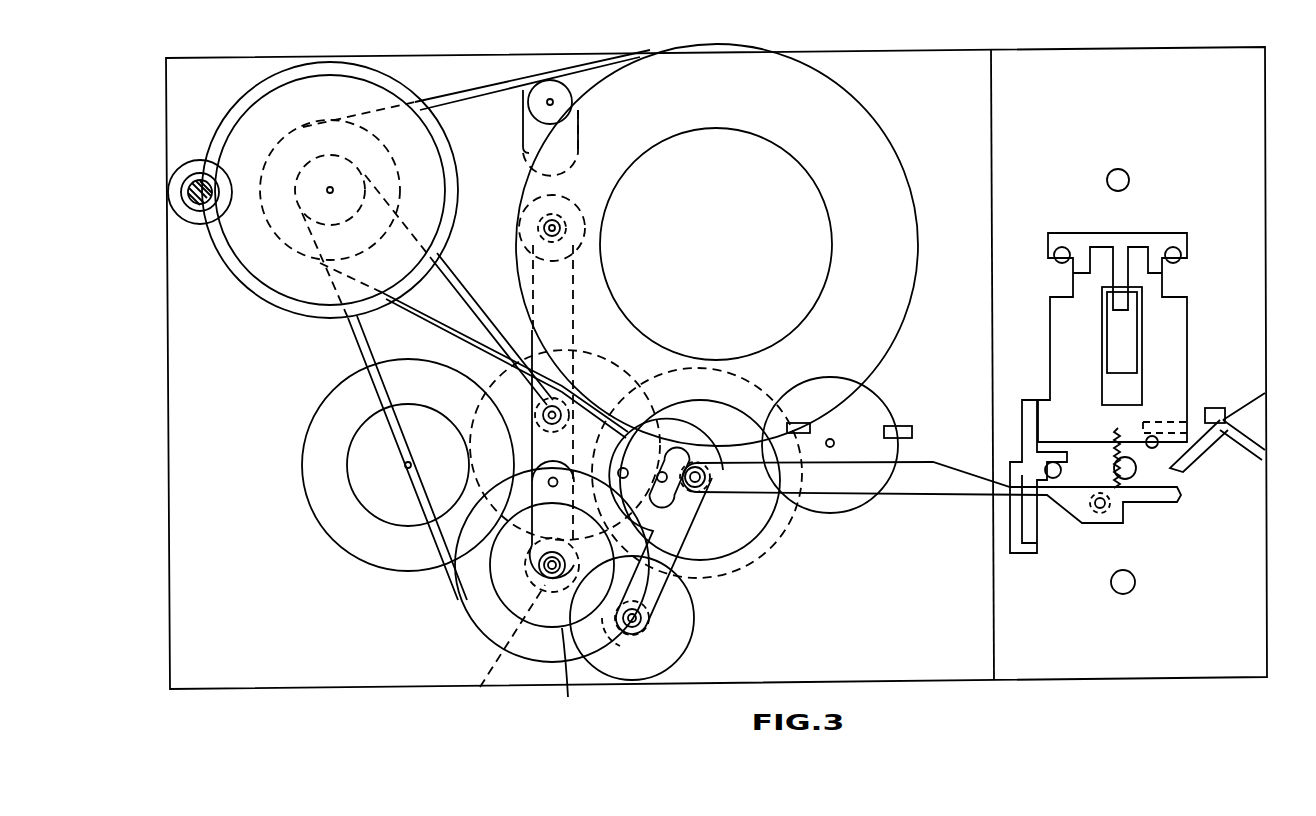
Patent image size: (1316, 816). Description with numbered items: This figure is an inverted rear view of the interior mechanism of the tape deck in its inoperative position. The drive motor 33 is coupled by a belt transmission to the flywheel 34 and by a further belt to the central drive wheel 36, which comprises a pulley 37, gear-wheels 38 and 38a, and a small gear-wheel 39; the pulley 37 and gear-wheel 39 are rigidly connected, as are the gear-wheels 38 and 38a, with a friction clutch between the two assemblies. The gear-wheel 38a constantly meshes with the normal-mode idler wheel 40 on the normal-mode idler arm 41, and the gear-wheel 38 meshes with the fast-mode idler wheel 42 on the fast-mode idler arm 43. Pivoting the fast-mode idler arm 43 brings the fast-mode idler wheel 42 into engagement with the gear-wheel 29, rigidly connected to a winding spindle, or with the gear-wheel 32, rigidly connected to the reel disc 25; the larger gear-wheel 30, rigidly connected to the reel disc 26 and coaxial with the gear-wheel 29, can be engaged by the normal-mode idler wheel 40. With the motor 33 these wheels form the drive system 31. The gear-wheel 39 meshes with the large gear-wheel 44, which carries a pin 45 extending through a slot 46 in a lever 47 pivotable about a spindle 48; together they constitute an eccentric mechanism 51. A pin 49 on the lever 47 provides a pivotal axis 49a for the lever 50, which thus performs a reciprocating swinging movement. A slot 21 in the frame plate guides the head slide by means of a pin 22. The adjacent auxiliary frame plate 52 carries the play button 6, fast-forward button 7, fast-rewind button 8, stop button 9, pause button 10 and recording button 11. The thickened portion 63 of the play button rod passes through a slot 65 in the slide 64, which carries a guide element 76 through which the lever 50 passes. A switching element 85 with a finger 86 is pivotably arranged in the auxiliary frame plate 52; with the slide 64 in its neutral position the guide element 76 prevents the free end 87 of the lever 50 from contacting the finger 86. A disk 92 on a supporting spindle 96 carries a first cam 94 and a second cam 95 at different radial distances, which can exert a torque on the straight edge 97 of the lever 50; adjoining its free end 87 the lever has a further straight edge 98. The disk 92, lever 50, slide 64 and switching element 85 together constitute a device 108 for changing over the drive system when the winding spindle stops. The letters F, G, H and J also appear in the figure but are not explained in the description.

The play button 6 is at (1127, 330).
The fast-forward button 7 is at (1177, 262).
The fast-rewind button 8 is at (1058, 262).
The stop button 9 is at (1128, 177).
The pause button 10 is at (1137, 470).
The recording button 11 is at (1135, 582).
The slot 21 is at (523, 133).
The pin 22 is at (531, 102).
The reel disc 25 is at (327, 540).
The reel disc 26 is at (782, 524).
The gear-wheel 29 is at (745, 377).
The gear-wheel 30 is at (705, 557).
The drive system 31 is at (375, 613).
The gear-wheel 32 is at (353, 462).
The drive motor 33 is at (270, 262).
The flywheel 34 is at (870, 137).
The central drive wheel 36 is at (523, 667).
The pulley 37 is at (490, 626).
The gear-wheel 38 is at (570, 673).
The gear-wheel 38a is at (501, 652).
The gear-wheel 39 is at (548, 587).
The normal-mode idler wheel 40 is at (680, 647).
The normal-mode idler arm 41 is at (598, 635).
The fast-mode idler wheel 42 is at (530, 378).
The fast-mode idler arm 43 is at (563, 288).
The gear-wheel 44 is at (638, 370).
The pin 45 is at (662, 433).
The slot 46 is at (627, 440).
The lever 47 is at (640, 598).
The spindle 48 is at (647, 620).
The pin 49 is at (706, 488).
The pivotal axis 49a is at (707, 477).
The lever 50 is at (918, 490).
The eccentric mechanism 51 is at (658, 416).
The auxiliary frame plate 52 is at (1240, 551).
The thickened portion 63 is at (1132, 357).
The slide 64 is at (1192, 307).
The slot 65 is at (1143, 383).
The guide element 76 is at (1023, 554).
The switching element 85 is at (1242, 424).
The finger 86 is at (1202, 445).
The free end 87 is at (1180, 496).
The disk 92 is at (863, 512).
The first cam 94 is at (907, 426).
The second cam 95 is at (797, 423).
The supporting spindle 96 is at (833, 440).
The edge 97 is at (845, 466).
The further straight edge 98 is at (1082, 487).
The device for changing over the drive system 108 is at (950, 532).
The direction F is at (578, 568).
The direction G is at (620, 490).
The direction H is at (921, 412).
The direction J is at (717, 483).